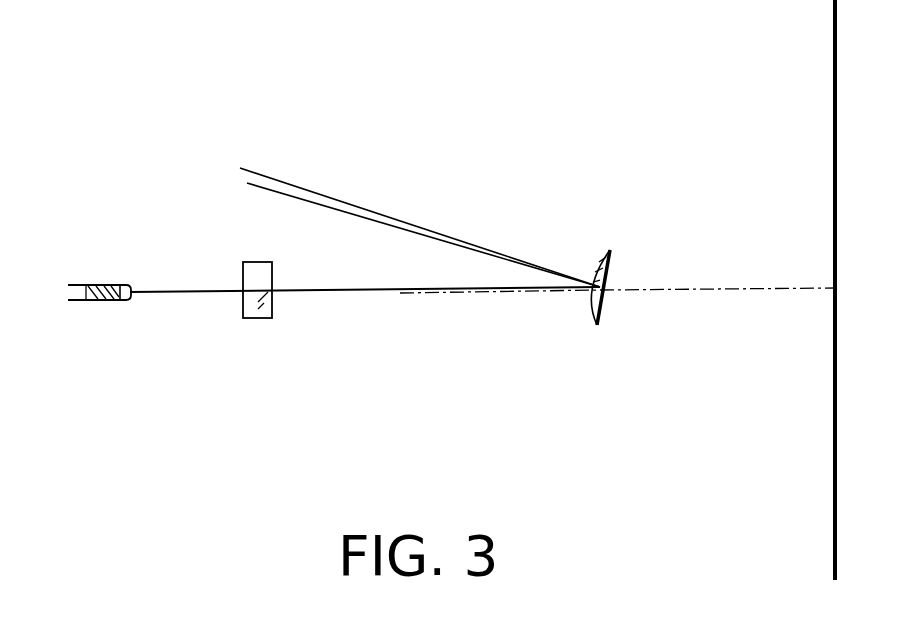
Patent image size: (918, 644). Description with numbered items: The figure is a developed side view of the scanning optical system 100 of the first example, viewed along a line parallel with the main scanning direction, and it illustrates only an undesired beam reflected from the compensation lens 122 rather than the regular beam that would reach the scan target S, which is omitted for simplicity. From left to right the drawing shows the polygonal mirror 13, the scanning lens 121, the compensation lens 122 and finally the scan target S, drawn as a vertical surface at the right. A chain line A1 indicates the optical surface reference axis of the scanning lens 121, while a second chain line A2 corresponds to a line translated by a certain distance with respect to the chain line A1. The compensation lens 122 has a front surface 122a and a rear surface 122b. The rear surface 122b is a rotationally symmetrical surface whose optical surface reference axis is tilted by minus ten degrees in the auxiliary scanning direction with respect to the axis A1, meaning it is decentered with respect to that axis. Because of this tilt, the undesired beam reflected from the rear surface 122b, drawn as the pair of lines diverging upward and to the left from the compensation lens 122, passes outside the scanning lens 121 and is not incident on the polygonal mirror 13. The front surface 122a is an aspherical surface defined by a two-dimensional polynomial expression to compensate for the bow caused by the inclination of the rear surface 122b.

The scanning optical system 100 is at (87, 171).
The polygonal mirror 13 is at (100, 303).
The scanning lens 121 is at (262, 321).
The compensation lens 122 is at (602, 305).
The front surface 122a is at (600, 265).
The rear surface 122b is at (611, 268).
The chain line (optical surface reference axis) A1 is at (443, 293).
The chain line (translated line) A2 is at (730, 290).
The scan target S is at (834, 50).